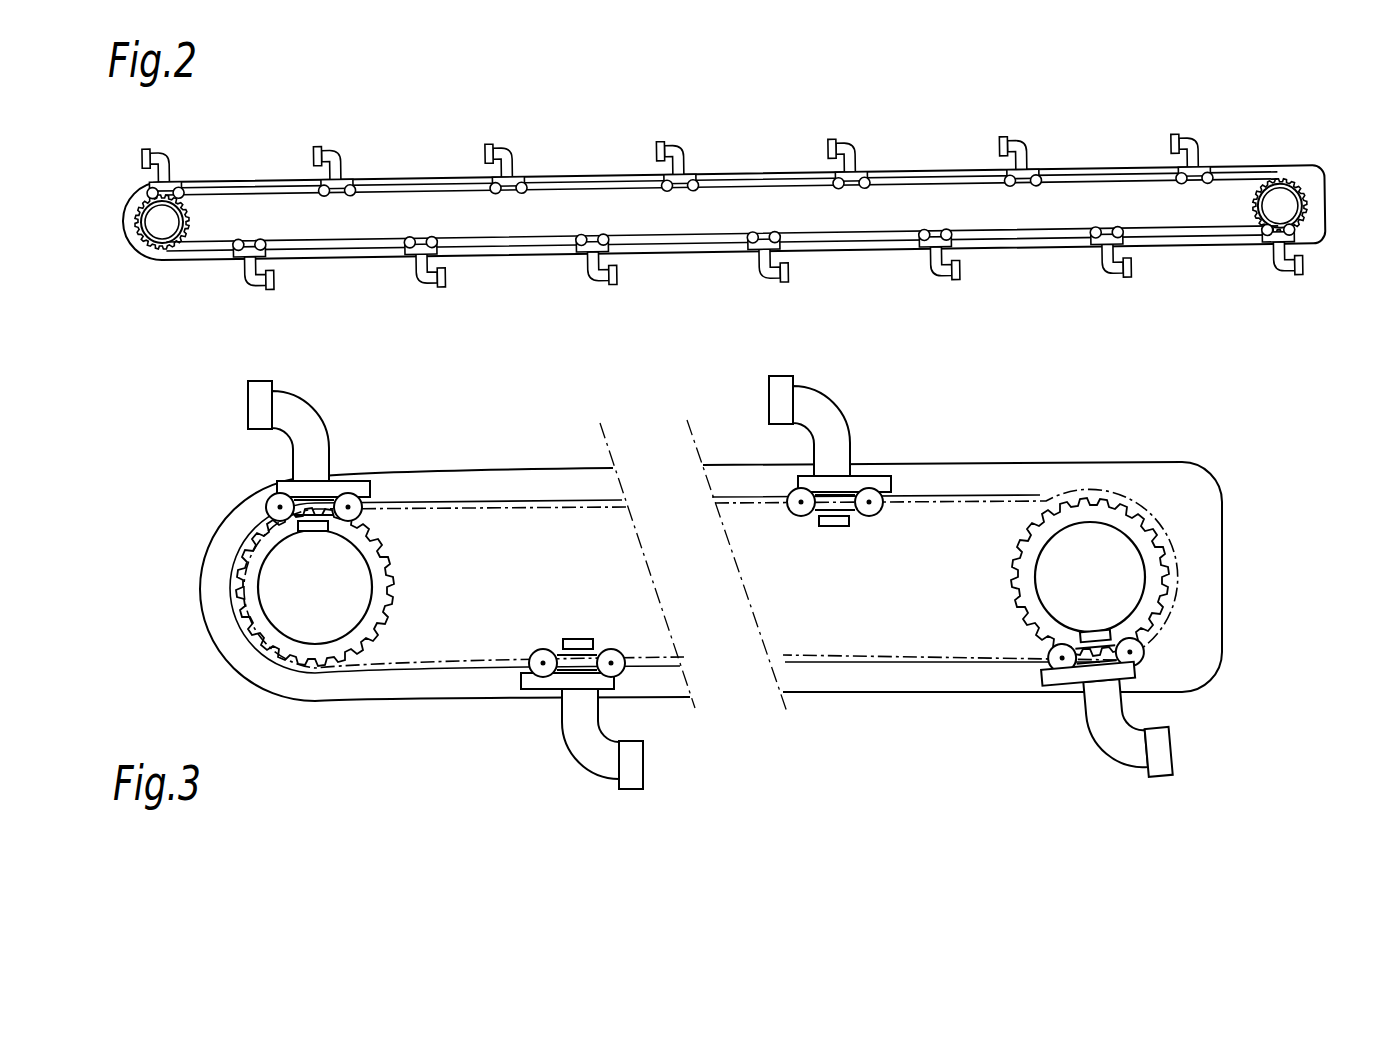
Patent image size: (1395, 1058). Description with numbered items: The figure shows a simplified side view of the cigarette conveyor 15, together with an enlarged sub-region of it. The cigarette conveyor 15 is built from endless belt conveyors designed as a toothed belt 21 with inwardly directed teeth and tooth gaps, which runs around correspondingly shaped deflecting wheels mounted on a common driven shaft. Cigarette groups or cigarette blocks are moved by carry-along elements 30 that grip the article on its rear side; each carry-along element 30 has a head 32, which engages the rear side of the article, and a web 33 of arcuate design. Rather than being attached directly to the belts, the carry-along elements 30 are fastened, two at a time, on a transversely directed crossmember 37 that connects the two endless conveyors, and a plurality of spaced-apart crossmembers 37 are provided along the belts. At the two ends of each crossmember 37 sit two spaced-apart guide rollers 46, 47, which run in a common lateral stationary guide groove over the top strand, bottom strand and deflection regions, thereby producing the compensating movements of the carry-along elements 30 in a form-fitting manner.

In FIG. 2, the cigarette conveyor 15 is at (1088, 155).
In FIG. 3, the cigarette conveyor 15 is at (1028, 432).
In FIG. 2, the toothed belt 21 is at (1060, 180).
In FIG. 3, the toothed belt 21 is at (1017, 503).
In FIG. 2, the carry-along element 30 is at (722, 161).
In FIG. 3, the carry-along element 30 is at (710, 584).
In FIG. 2, the head 32 is at (487, 153).
In FIG. 3, the head 32 is at (780, 387).
In FIG. 2, the web 33 is at (512, 165).
In FIG. 3, the web 33 is at (823, 415).
In FIG. 3, the crossmember 37 is at (573, 665).
In FIG. 3, the guide roller 46 is at (610, 660).
In FIG. 3, the guide roller 47 is at (540, 663).